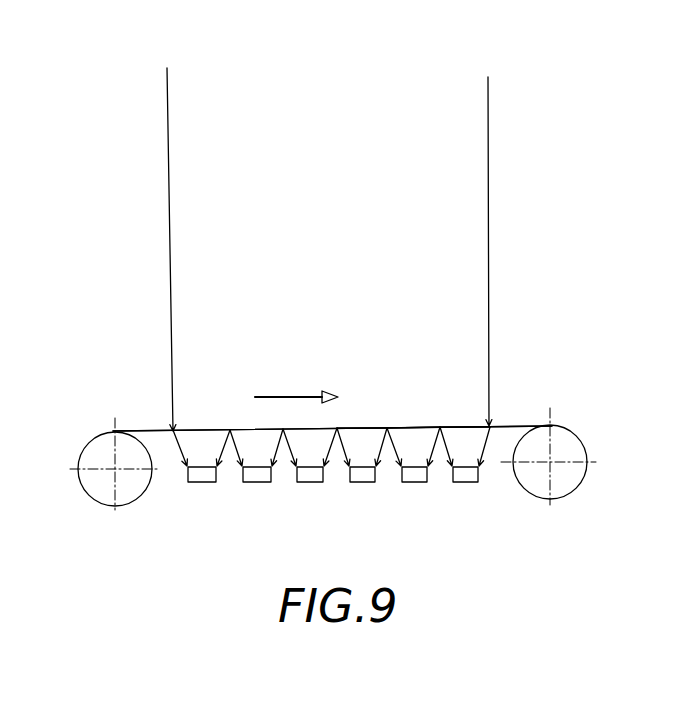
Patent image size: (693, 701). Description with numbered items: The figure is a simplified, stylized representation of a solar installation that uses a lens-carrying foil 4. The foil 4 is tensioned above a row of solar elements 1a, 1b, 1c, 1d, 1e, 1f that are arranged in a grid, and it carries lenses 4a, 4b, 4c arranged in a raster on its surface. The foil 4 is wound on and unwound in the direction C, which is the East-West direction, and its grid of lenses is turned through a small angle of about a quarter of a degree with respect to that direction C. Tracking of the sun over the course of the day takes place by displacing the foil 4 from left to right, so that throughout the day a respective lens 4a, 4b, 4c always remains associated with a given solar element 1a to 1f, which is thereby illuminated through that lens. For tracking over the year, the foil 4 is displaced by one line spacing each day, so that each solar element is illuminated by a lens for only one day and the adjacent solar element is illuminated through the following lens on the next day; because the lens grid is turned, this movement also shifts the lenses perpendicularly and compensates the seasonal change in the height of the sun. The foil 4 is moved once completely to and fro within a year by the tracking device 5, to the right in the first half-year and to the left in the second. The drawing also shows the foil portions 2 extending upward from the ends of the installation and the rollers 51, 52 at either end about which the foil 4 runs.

The solar element 1a is at (466, 482).
The solar element 1b is at (414, 482).
The solar element 1c is at (362, 482).
The solar element 1d is at (310, 482).
The solar element 1e is at (257, 482).
The solar element 1f is at (202, 482).
The sheet 2 is at (168, 183).
The foil 4 is at (152, 424).
The lens 4a is at (465, 427).
The lens 4b is at (413, 427).
The lens 4c is at (367, 427).
The tracking device 5 is at (564, 411).
The roller 51 is at (103, 485).
The roller 52 is at (563, 470).
The direction C is at (302, 395).